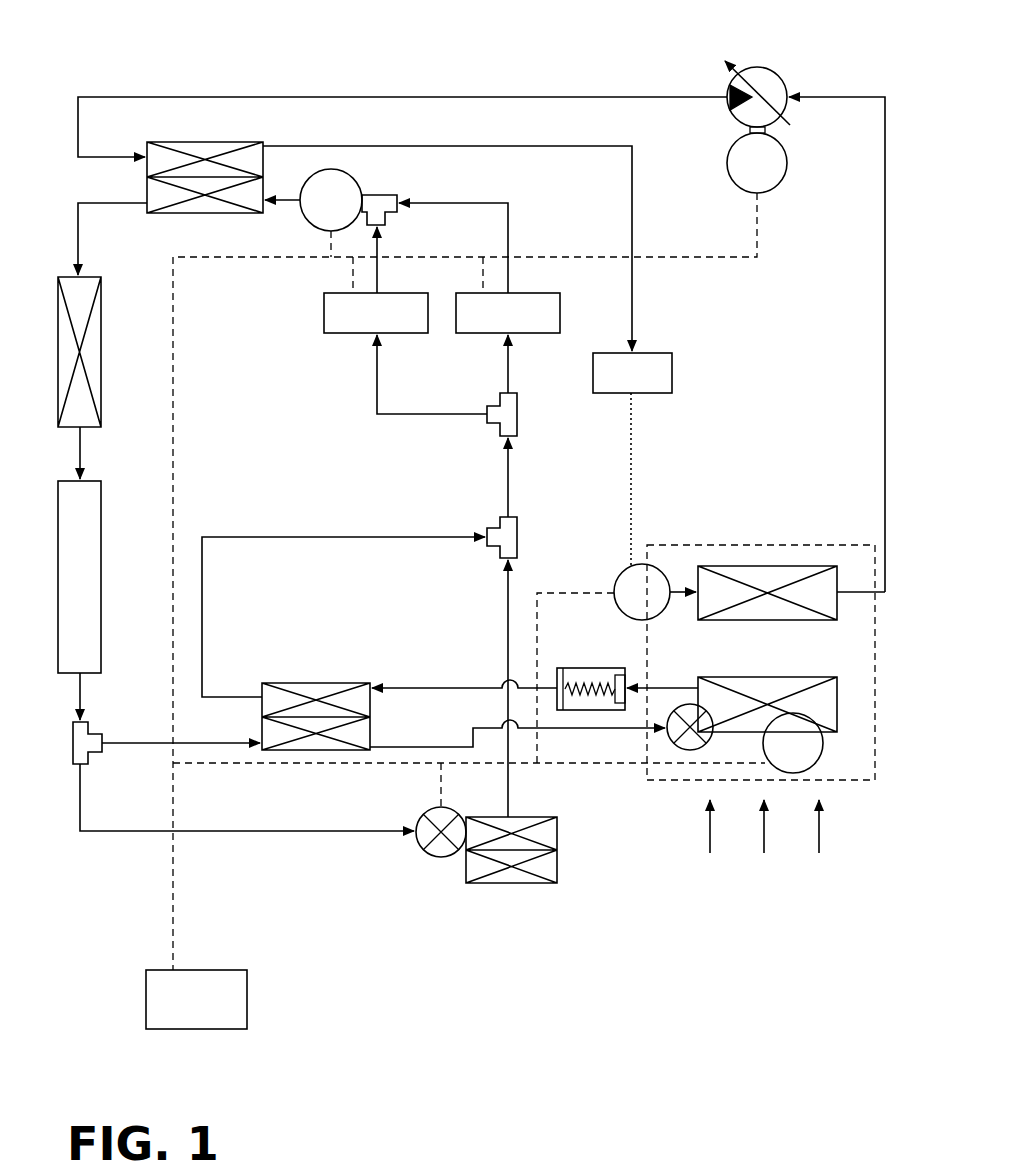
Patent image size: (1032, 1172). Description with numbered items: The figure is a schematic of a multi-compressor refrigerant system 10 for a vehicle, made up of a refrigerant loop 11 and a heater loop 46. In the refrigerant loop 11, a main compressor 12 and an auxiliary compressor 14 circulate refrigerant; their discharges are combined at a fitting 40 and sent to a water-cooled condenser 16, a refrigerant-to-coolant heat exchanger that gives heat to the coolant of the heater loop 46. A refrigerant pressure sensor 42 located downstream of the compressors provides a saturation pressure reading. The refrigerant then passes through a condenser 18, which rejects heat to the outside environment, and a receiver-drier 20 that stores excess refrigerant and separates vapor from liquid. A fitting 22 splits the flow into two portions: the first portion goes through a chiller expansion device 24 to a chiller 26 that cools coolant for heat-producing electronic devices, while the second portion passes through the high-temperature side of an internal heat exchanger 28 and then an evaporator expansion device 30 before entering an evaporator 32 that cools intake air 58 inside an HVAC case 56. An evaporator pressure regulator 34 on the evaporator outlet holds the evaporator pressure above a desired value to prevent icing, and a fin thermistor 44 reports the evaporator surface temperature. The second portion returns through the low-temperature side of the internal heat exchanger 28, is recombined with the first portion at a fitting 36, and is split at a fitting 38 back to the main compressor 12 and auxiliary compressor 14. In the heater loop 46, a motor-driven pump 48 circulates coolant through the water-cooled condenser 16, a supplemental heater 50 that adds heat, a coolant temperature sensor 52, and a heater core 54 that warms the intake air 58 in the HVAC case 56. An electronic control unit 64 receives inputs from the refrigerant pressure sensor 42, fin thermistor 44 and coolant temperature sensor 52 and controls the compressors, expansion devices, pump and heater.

The multi-compressor refrigerant system 10 is at (676, 930).
The refrigerant loop 11 is at (319, 864).
The main compressor 12 is at (324, 300).
The auxiliary compressor 14 is at (560, 320).
The water-cooled condenser 16 is at (198, 142).
The condenser 18 is at (58, 336).
The receiver-drier 20 is at (58, 530).
The fitting 22 is at (73, 745).
The chiller expansion device 24 is at (423, 850).
The chiller 26 is at (557, 877).
The internal heat exchanger 28 is at (318, 683).
The evaporator expansion device 30 is at (690, 704).
The evaporator 32 is at (745, 677).
The evaporator pressure regulator 34 is at (610, 668).
The fitting 36 is at (517, 537).
The fitting 38 is at (517, 410).
The fitting 40 is at (380, 195).
The refrigerant pressure sensor 42 is at (317, 170).
The fin thermistor 44 is at (820, 770).
The heater loop 46 is at (512, 76).
The pump 48 is at (775, 75).
The supplemental heater 50 is at (672, 365).
The coolant temperature sensor 52 is at (660, 570).
The heater core 54 is at (765, 566).
The HVAC case 56 is at (875, 735).
The intake air 58 is at (818, 835).
The electronic control unit 64 is at (247, 995).